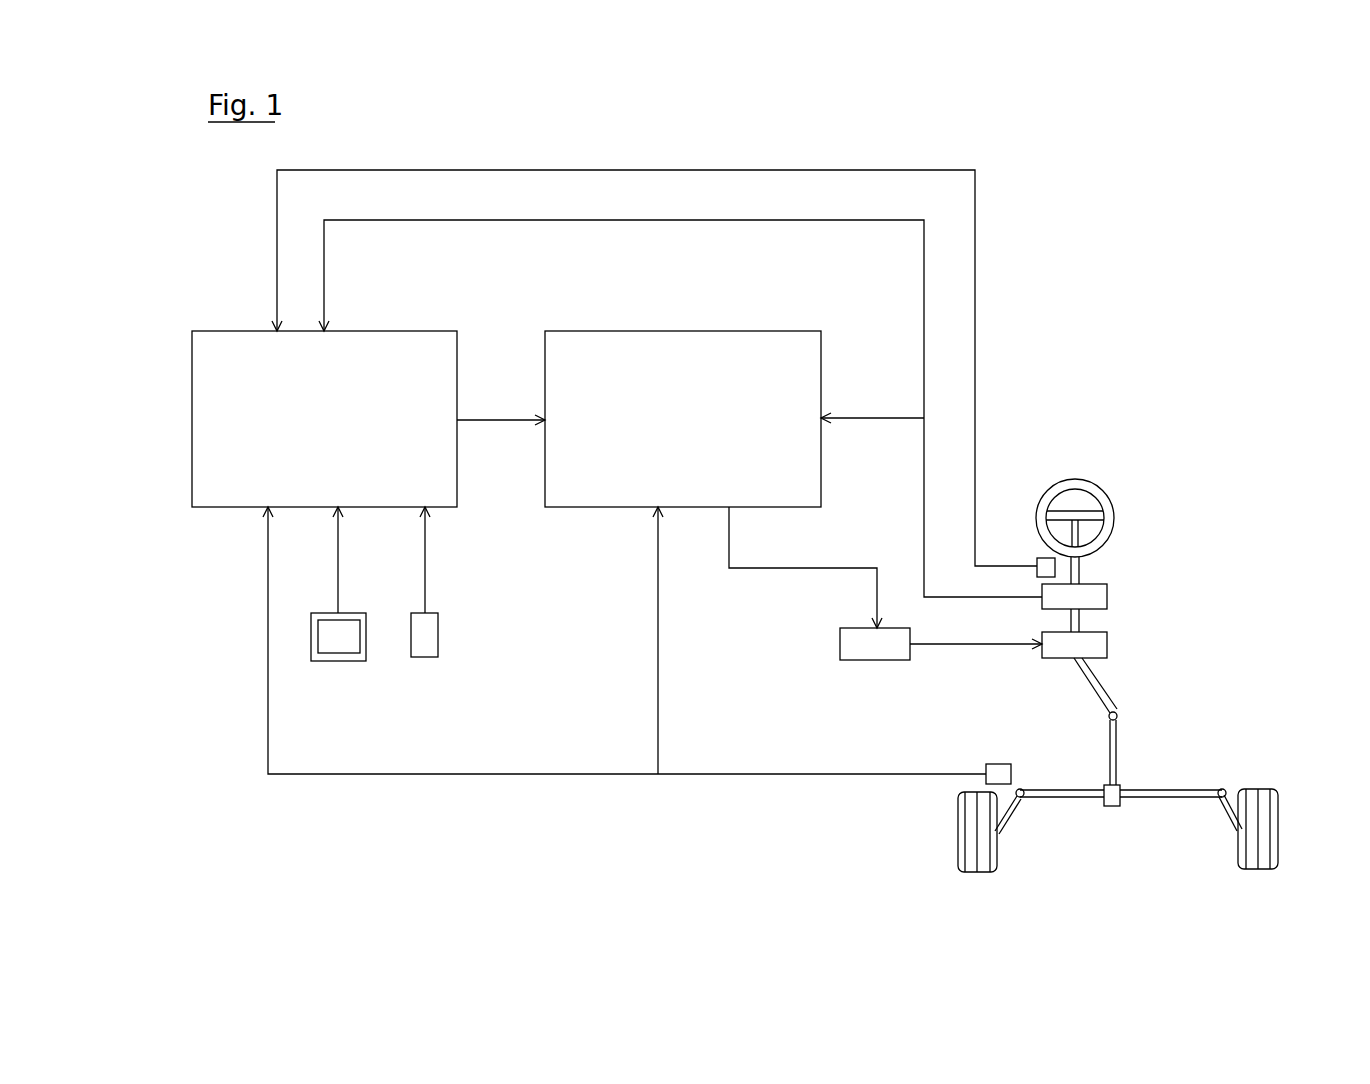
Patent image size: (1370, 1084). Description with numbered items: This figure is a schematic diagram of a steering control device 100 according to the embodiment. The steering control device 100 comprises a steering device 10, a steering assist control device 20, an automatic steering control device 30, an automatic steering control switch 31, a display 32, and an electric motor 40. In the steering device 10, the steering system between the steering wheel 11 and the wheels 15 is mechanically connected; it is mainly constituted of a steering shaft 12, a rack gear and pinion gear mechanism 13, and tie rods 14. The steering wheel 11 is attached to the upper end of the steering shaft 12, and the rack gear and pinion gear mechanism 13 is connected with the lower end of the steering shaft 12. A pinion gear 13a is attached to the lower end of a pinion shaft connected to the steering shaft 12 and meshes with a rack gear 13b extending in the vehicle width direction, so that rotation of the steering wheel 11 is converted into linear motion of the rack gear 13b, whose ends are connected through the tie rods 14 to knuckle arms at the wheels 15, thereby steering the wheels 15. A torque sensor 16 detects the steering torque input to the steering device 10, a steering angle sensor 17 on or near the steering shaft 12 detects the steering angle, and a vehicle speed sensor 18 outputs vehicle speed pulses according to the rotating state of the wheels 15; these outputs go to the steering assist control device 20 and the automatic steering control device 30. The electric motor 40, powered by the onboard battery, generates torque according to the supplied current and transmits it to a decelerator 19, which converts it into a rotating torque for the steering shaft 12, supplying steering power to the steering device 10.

The steering control device 100 is at (1157, 337).
The automatic steering control device 30 is at (417, 331).
The steering assist control device 20 is at (723, 331).
The automatic steering control switch 31 is at (438, 632).
The display 32 is at (345, 661).
The electric motor 40 is at (840, 645).
The steering device 10 is at (1155, 700).
The steering wheel 11 is at (1113, 493).
The steering shaft 12 is at (1082, 570).
The steering angle sensor 17 is at (1040, 558).
The torque sensor 16 is at (1107, 594).
The decelerator 19 is at (1107, 647).
The vehicle speed sensor 18 is at (1011, 774).
The rack gear and pinion gear mechanism 13 is at (1083, 806).
The pinion gear 13a is at (1113, 806).
The rack gear 13b is at (1182, 790).
The tie rods 14 is at (1012, 815).
The wheels 15 is at (1280, 802).